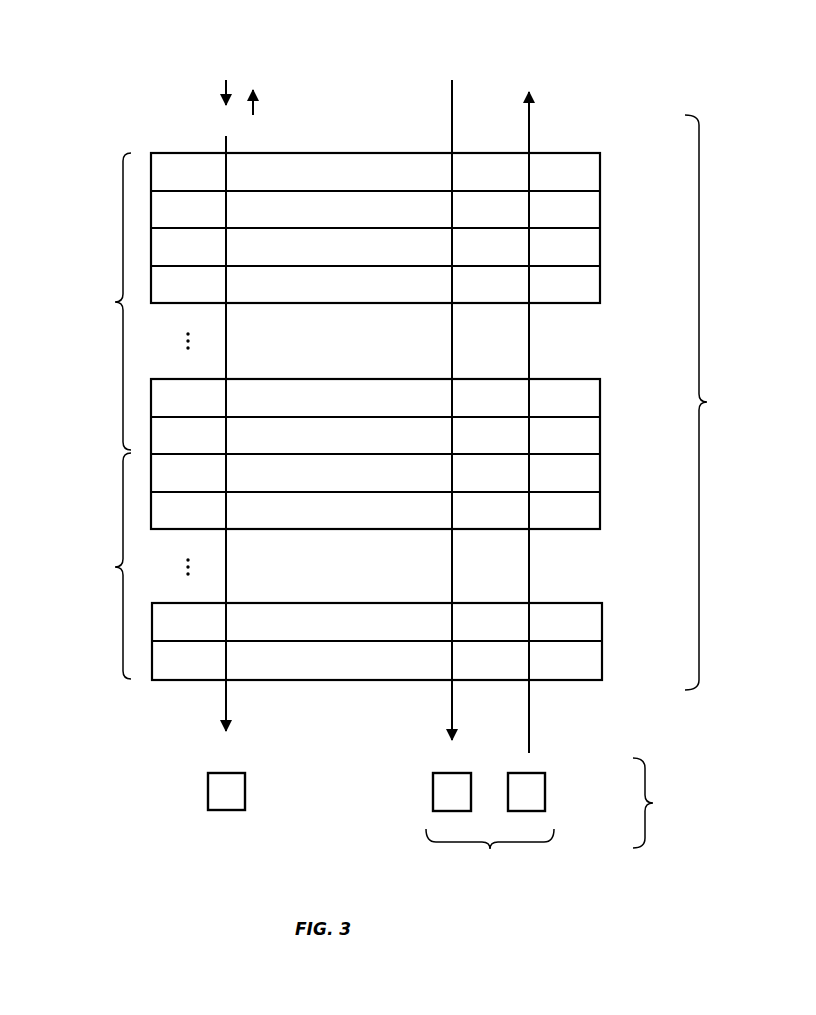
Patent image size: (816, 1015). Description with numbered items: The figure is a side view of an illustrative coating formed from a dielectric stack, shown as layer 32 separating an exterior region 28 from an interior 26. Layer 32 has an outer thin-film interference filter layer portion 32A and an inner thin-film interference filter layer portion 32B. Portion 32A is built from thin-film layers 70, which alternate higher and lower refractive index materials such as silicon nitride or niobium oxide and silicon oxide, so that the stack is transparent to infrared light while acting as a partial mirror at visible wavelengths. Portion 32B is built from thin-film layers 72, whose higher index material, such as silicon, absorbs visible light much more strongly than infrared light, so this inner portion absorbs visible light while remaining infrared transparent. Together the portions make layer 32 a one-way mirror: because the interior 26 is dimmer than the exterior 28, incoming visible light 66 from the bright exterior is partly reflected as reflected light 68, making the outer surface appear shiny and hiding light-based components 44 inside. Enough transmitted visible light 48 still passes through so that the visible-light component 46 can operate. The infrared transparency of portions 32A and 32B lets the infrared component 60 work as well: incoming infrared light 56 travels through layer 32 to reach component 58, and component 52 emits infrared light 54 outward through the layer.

The interior 26 is at (124, 876).
The exterior region 28 is at (118, 57).
The layer 32 is at (443, 402).
The outer thin-film interference filter layer portion 32A is at (101, 301).
The inner thin-film interference filter layer portion 32B is at (101, 566).
The light-based components 44 is at (659, 803).
The visible-light component 46 is at (207, 791).
The transmitted visible light 48 is at (224, 706).
The component 52 is at (548, 792).
The infrared light 54 is at (532, 113).
The incoming infrared light 56 is at (450, 98).
The component 58 is at (432, 792).
The infrared component 60 is at (490, 855).
The incoming visible light 66 is at (223, 97).
The reflected light 68 is at (258, 103).
The thin-film layers 70 is at (590, 248).
The thin-film layers 72 is at (591, 515).